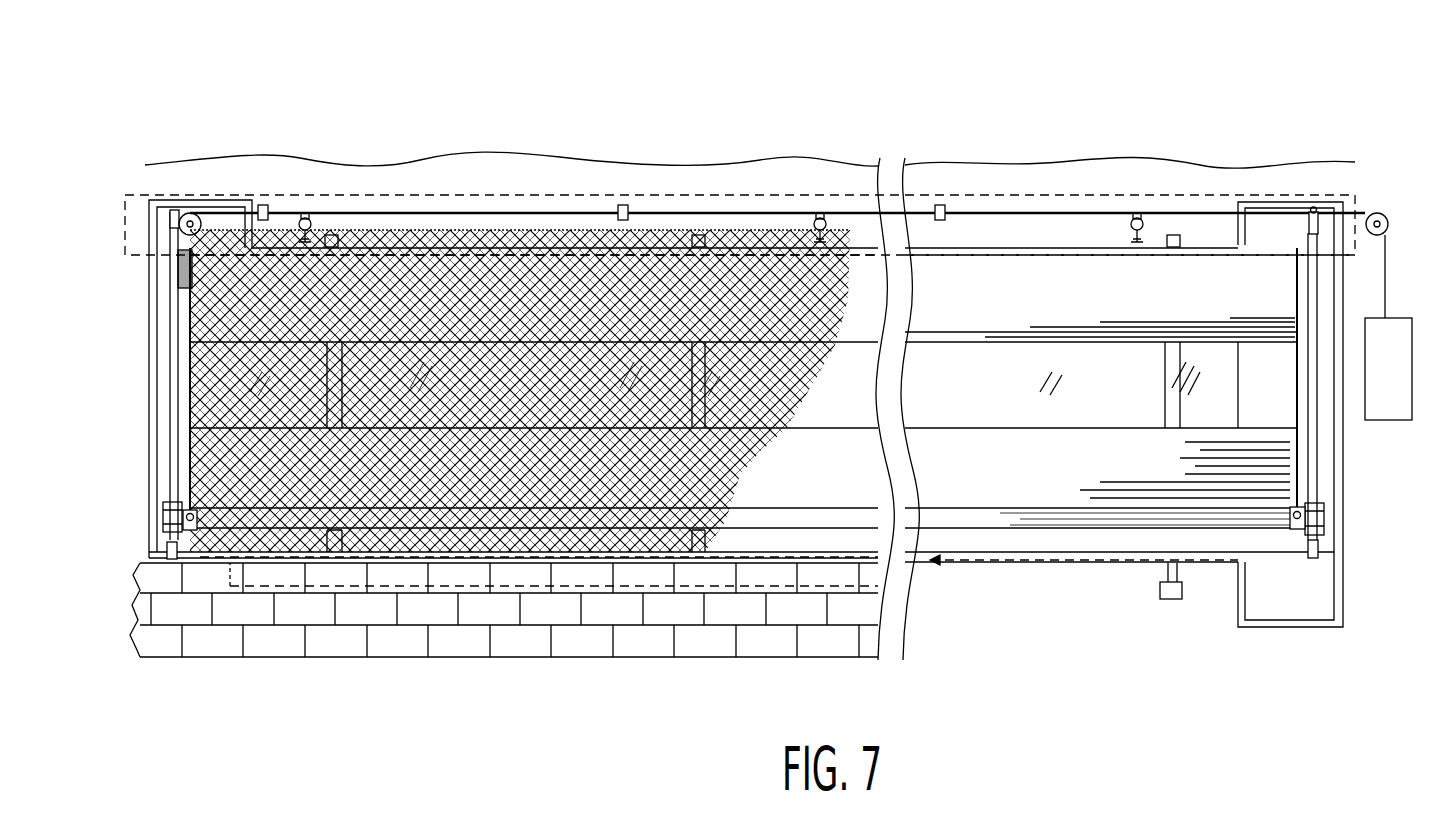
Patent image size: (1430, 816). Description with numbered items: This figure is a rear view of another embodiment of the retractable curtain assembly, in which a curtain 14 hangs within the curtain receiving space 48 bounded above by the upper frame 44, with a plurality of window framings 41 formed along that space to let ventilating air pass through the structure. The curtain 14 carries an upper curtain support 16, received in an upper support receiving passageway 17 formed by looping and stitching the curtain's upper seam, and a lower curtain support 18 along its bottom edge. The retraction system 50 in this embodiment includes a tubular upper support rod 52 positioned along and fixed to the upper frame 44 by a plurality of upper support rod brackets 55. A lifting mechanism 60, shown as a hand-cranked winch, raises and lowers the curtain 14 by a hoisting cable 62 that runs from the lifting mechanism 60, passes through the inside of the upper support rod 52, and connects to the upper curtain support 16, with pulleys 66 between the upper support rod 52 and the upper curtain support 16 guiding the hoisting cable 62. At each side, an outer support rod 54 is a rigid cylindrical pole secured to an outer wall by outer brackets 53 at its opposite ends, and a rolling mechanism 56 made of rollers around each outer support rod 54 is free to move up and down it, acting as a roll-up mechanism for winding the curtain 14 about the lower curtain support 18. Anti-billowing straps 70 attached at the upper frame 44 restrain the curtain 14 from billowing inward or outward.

The curtain 14 is at (1043, 485).
The upper curtain support 16 is at (1000, 240).
The upper support receiving passageway 17 is at (1060, 240).
The lower curtain support 18 is at (968, 520).
The window framing 41 is at (172, 560).
The upper frame 44 is at (136, 192).
The curtain receiving space 48 is at (1202, 230).
The retraction system 50 is at (1085, 120).
The upper support rod 52 is at (676, 215).
The outer bracket 53 is at (1312, 210).
The outer support rod 54 is at (165, 208).
The upper support rod bracket 55 is at (263, 205).
The rolling mechanism 56 is at (160, 522).
The lifting mechanism 60 is at (1390, 418).
The hoisting cable 62 is at (1386, 264).
The pulley 66 is at (200, 212).
The anti-billowing strap 70 is at (343, 382).